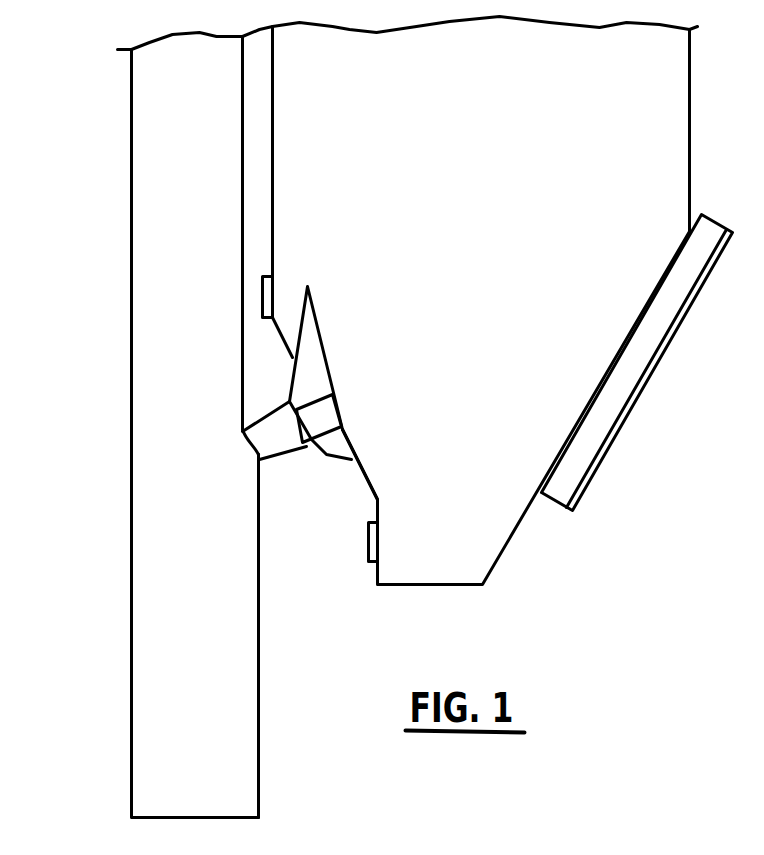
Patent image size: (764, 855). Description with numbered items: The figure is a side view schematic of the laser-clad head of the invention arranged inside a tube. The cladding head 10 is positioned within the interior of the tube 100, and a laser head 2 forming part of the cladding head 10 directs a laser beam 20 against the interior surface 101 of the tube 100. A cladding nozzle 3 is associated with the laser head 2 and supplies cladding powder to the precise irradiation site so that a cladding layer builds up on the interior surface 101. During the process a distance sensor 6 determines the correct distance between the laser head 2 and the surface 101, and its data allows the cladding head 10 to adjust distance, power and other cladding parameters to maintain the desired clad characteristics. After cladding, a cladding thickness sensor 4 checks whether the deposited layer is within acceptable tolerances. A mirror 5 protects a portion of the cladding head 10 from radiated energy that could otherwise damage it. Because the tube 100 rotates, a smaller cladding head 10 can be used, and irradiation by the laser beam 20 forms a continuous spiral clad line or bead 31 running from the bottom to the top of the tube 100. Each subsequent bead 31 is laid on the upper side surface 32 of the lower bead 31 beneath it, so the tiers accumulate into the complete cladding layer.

The cladding head 10 is at (273, 173).
The tube 100 is at (132, 197).
The interior surface 101 is at (246, 352).
The distance sensor 6 is at (262, 300).
The laser head 2 is at (288, 384).
The upper side surface 32 is at (247, 447).
The laser beam 20 is at (247, 458).
The cladding nozzle 3 is at (325, 425).
The cladding thickness sensor 4 is at (369, 543).
The mirror 5 is at (611, 447).
The spiral clad line or bead 31 is at (260, 624).